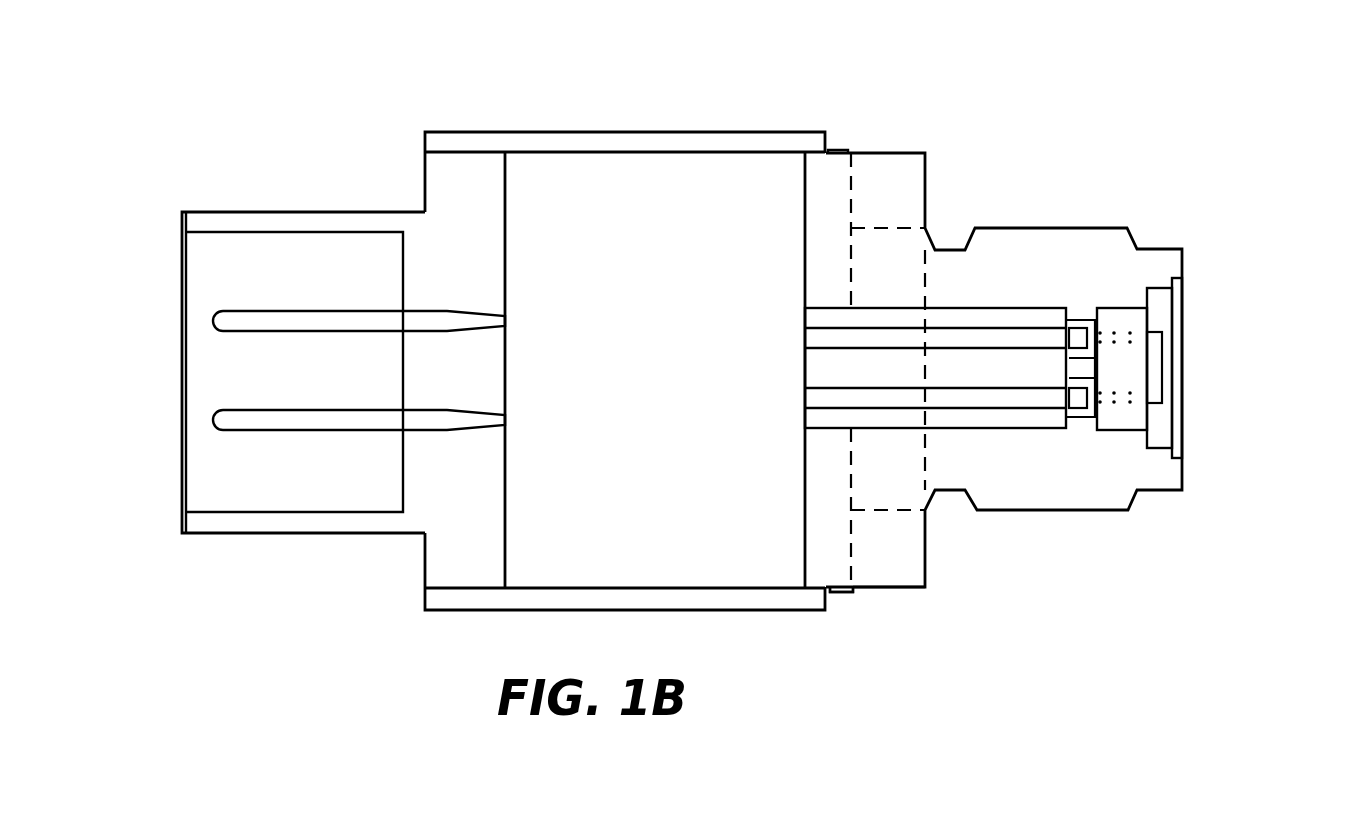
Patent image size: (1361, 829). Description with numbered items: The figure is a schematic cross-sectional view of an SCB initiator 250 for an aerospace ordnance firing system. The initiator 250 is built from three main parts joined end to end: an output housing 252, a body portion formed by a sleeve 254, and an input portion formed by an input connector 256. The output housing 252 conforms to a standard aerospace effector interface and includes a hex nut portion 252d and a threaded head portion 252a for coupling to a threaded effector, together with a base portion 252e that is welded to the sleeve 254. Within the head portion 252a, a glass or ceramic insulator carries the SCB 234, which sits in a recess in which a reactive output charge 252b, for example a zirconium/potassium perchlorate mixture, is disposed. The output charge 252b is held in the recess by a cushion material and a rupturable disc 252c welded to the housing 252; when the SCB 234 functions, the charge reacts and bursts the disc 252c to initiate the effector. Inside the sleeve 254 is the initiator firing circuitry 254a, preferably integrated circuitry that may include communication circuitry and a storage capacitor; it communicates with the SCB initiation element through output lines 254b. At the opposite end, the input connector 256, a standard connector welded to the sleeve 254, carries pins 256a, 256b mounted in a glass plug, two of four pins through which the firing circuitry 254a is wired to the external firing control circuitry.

The initiator 250 is at (749, 366).
The output housing 252 is at (962, 194).
The threaded head portion 252a is at (1203, 175).
The reactive output charge 252b is at (1160, 315).
The rupturable disc 252c is at (1317, 444).
The hex nut portion 252d is at (906, 590).
The base portion 252e is at (842, 592).
The SCB 234 is at (1152, 367).
The sleeve 254 is at (587, 130).
The initiator firing circuitry 254a is at (692, 285).
The output lines 254b is at (833, 338).
The input connector 256 is at (355, 212).
The pin 256a is at (352, 312).
The pin 256b is at (362, 410).